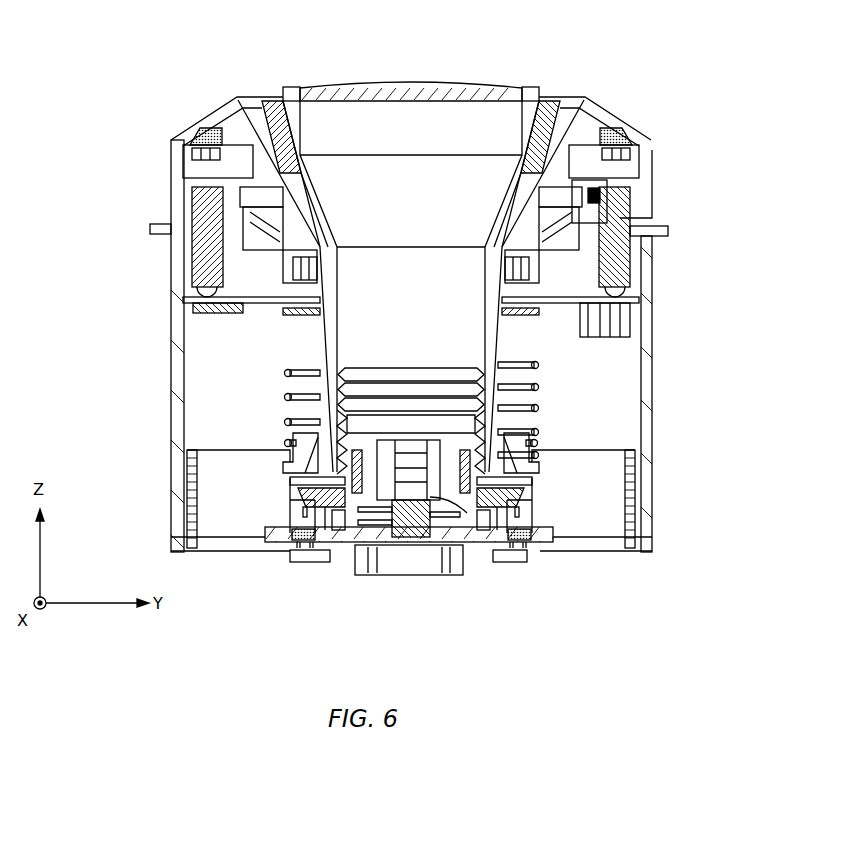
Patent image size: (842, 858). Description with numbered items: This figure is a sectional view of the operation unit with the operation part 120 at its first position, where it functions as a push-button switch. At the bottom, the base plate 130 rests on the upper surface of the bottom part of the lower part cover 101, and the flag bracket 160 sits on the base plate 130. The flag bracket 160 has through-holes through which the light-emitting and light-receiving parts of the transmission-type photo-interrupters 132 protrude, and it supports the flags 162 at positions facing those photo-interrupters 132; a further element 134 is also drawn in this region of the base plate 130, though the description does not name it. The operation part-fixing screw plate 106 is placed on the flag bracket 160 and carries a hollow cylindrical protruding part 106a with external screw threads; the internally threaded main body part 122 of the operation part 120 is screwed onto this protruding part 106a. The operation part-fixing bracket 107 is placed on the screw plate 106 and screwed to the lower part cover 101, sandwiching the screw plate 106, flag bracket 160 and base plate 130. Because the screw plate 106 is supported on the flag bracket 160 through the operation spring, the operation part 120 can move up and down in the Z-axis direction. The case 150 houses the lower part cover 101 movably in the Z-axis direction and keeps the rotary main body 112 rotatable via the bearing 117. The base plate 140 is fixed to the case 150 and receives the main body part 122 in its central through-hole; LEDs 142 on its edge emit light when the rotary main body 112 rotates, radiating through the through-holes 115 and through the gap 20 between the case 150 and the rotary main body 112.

The gap 20 is at (662, 216).
The lower part cover 101 is at (263, 548).
The operation part-fixing screw plate 106 is at (315, 468).
The hollow cylindrical protruding part 106a is at (297, 447).
The operation part-fixing bracket 107 is at (330, 420).
The rotary main body 112 is at (648, 160).
The through-holes 115 is at (618, 118).
The bearing 117 is at (662, 230).
The operation part 120 is at (544, 78).
The main body part 122 is at (327, 366).
The base plate 130 is at (553, 537).
The transmission-type photo-interrupters 132 is at (284, 511).
The motor 134 is at (462, 522).
The base plate 140 is at (630, 302).
The LEDs 142 is at (630, 282).
The case 150 is at (645, 268).
The flag bracket 160 is at (268, 530).
The flags 162 is at (285, 492).